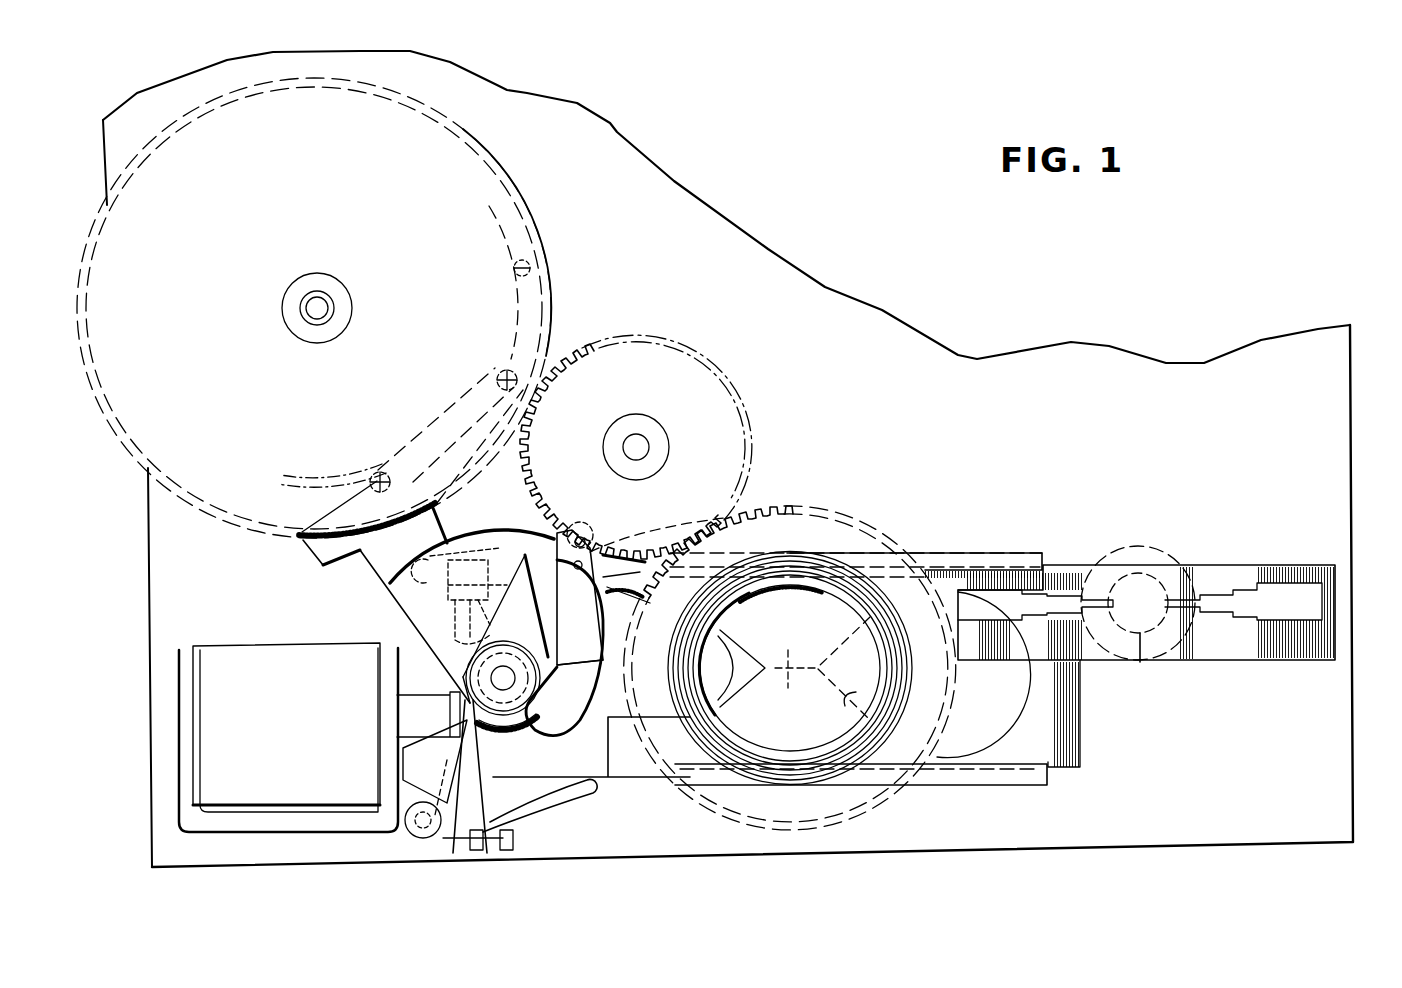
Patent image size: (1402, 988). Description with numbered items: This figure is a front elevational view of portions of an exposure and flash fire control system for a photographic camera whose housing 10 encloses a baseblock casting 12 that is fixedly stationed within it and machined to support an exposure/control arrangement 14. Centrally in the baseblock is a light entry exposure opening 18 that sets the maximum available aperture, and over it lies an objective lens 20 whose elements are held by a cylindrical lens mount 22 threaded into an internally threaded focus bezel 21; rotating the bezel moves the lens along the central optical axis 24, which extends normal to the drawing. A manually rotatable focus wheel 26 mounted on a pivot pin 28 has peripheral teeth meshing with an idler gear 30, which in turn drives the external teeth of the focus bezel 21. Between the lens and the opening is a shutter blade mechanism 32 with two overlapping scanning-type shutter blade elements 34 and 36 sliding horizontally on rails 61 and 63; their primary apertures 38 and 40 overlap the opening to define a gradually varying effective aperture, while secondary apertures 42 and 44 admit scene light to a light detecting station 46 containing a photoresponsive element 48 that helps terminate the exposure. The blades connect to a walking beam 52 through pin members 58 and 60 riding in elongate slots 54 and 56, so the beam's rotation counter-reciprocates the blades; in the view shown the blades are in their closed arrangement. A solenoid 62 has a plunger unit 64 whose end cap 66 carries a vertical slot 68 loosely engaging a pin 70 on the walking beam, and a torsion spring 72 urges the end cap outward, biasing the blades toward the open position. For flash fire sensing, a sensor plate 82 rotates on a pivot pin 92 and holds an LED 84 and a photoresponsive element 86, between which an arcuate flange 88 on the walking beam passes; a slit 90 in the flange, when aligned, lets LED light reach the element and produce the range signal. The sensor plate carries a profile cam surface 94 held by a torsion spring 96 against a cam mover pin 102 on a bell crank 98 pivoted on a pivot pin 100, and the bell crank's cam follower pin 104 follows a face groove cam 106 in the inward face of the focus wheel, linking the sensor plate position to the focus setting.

The housing 10 is at (1360, 646).
The baseblock casting 12 is at (1082, 422).
The exposure/control arrangement 14 is at (884, 520).
The light entry exposure opening 18 is at (757, 747).
The objective lens 20 is at (828, 752).
The focus bezel 21 is at (767, 527).
The cylindrical lens mount 22 is at (884, 748).
The central optical axis 24 is at (802, 660).
The focus wheel 26 is at (487, 145).
The pivot pin 28 is at (325, 300).
The idler gear 30 is at (707, 373).
The shutter blade mechanism 32 is at (944, 549).
The shutter blade element 34 is at (1102, 661).
The shutter blade element 36 is at (637, 778).
The primary aperture 38 is at (740, 650).
The primary aperture 40 is at (845, 699).
The secondary aperture 42 is at (1038, 593).
The secondary aperture 44 is at (1225, 597).
The light detecting station 46 is at (1160, 548).
The photoresponsive element 48 is at (1140, 663).
The walking beam 52 is at (472, 767).
The elongate slot 54 is at (420, 822).
The elongate slot 56 is at (588, 530).
The pin member 58 is at (435, 761).
The pin member 60 is at (640, 533).
The rail 61 is at (992, 558).
The solenoid 62 is at (258, 640).
The rail 63 is at (1040, 785).
The plunger unit 64 is at (423, 695).
The end cap 66 is at (500, 720).
The vertical slot 68 is at (477, 717).
The pin 70 is at (525, 716).
The torsion spring 72 is at (514, 840).
The sensor plate 82 is at (580, 597).
The LED 84 is at (502, 527).
The photoresponsive element 86 is at (542, 612).
The arcuate flange 88 is at (607, 697).
The slit 90 is at (630, 637).
The pivot pin 92 is at (517, 680).
The profile cam surface 94 is at (410, 597).
The torsion spring 96 is at (487, 806).
The bell crank 98 is at (419, 422).
The pivot pin 100 is at (378, 474).
The cam mover pin 102 is at (433, 628).
The cam follower pin 104 is at (503, 370).
The face groove cam 106 is at (528, 268).